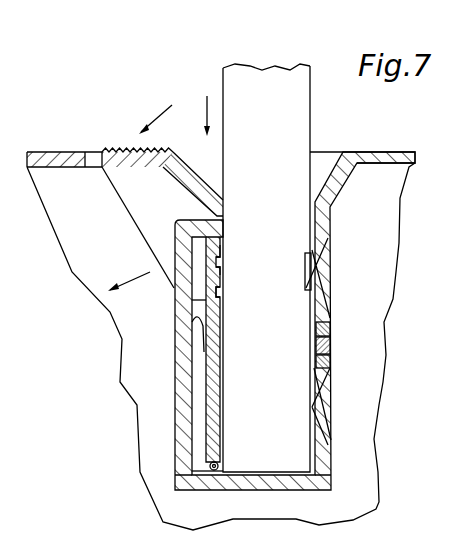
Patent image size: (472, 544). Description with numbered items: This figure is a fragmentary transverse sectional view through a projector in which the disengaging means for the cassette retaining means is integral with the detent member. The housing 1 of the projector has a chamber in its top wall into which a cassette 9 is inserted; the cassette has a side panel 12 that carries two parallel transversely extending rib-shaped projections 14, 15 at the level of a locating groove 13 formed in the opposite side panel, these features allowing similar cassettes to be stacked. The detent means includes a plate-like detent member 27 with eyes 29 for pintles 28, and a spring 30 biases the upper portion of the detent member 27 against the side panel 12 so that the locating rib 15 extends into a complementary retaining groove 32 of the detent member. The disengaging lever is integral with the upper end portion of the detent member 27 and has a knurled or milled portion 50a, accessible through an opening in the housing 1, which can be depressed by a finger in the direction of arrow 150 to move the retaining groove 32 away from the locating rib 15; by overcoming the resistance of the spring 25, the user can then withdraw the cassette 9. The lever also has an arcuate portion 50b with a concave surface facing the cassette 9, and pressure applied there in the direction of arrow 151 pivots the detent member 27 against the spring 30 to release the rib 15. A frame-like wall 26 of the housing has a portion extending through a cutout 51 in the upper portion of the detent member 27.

The housing 1 is at (57, 152).
The cassette 9 is at (304, 108).
The side panel 12 is at (222, 67).
The locating groove 13 is at (307, 287).
The rib-shaped projection 14 is at (221, 266).
The locating rib 15 is at (221, 291).
The spring 25 is at (326, 432).
The frame-like wall 26 is at (185, 218).
The detent member 27 is at (206, 380).
The pintle 28 is at (206, 466).
The eye 29 is at (174, 490).
The spring 30 is at (193, 322).
The retaining groove 32 is at (190, 300).
The milled portion 50a is at (134, 147).
The arcuate portion 50b is at (207, 173).
The cutout 51 is at (221, 250).
The arrow 150 is at (158, 102).
The arrow 151 is at (205, 106).